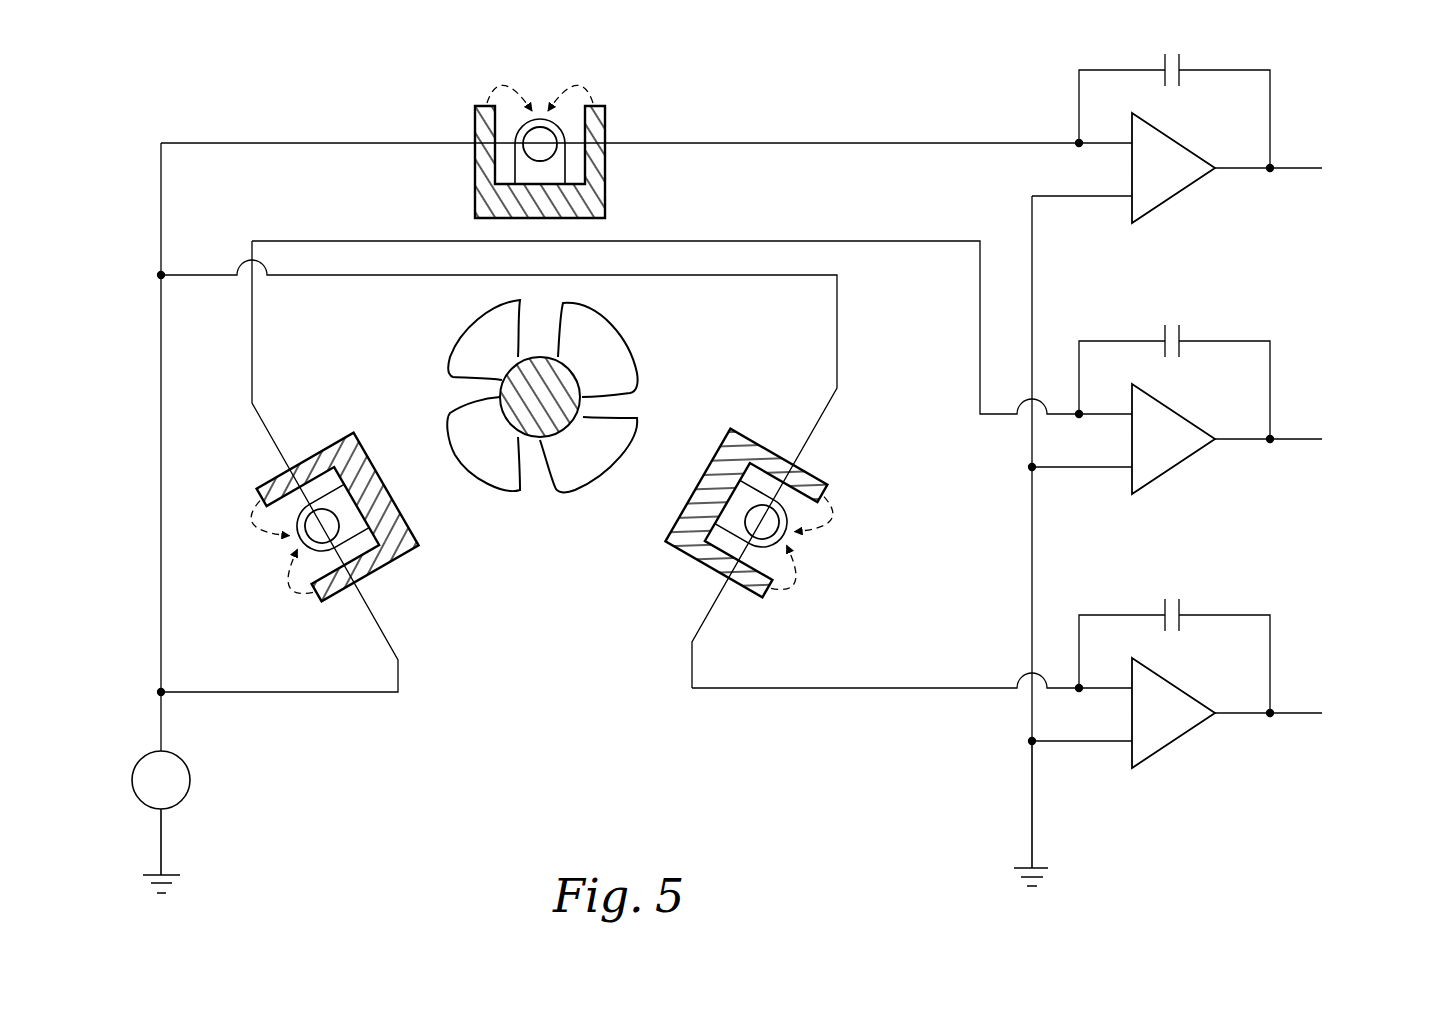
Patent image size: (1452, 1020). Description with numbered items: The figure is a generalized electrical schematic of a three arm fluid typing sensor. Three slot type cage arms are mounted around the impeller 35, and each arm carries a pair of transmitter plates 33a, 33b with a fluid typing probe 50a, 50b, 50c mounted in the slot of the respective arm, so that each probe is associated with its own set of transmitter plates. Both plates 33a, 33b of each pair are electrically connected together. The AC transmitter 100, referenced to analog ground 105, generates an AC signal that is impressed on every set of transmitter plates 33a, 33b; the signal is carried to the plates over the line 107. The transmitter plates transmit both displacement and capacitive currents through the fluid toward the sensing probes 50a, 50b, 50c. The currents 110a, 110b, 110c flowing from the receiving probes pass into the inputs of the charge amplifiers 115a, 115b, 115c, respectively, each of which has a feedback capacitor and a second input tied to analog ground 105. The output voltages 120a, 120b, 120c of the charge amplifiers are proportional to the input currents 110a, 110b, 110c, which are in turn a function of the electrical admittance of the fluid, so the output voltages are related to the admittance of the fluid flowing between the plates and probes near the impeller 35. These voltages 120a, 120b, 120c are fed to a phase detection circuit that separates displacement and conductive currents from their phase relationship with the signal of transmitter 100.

The transmitter plate 33a is at (475, 118).
The transmitter plate 33b is at (605, 120).
The impeller 35 is at (462, 338).
The fluid typing probe 50a is at (525, 152).
The fluid typing probe 50b is at (345, 533).
The fluid typing probe 50c is at (758, 505).
The AC transmitter 100 is at (192, 777).
The analog ground 105 is at (172, 873).
The input of the charge amplifier 107 is at (163, 597).
The current 110a is at (930, 142).
The current 110b is at (930, 240).
The current 110c is at (930, 687).
The charge amplifier 115a is at (1170, 197).
The charge amplifier 115b is at (1170, 468).
The charge amplifier 115c is at (1170, 742).
The output voltage 120a is at (1356, 153).
The output voltage 120b is at (1356, 424).
The output voltage 120c is at (1356, 698).